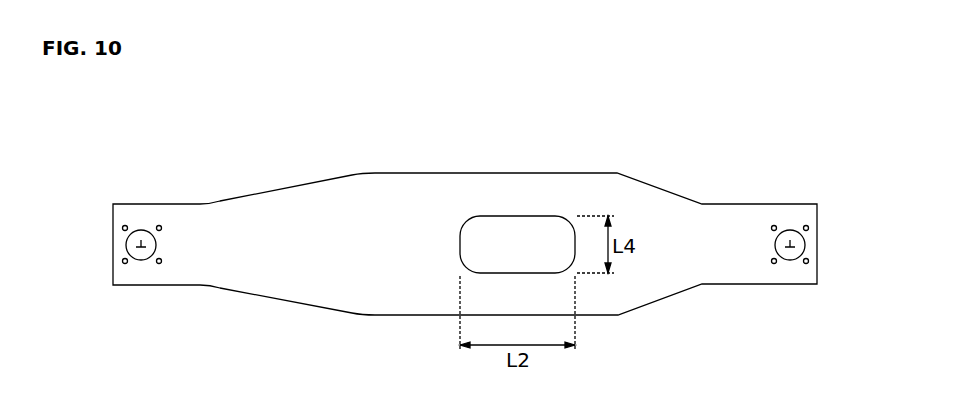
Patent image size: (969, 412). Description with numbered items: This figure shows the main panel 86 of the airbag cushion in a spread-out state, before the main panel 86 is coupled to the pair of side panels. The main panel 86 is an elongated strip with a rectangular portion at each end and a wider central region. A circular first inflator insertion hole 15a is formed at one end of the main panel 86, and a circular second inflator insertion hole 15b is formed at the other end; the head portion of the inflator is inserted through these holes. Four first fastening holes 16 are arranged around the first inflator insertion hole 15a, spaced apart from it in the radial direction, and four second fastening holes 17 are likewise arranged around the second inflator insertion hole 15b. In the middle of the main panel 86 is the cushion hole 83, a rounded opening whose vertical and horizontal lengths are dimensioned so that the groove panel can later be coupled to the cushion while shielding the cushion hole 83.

The main panel 86 is at (107, 130).
The first inflator insertion hole 15a is at (141, 245).
The second inflator insertion hole 15b is at (790, 245).
The first fastening holes 16 is at (122, 226).
The second fastening holes 17 is at (808, 227).
The cushion hole 83 is at (512, 241).